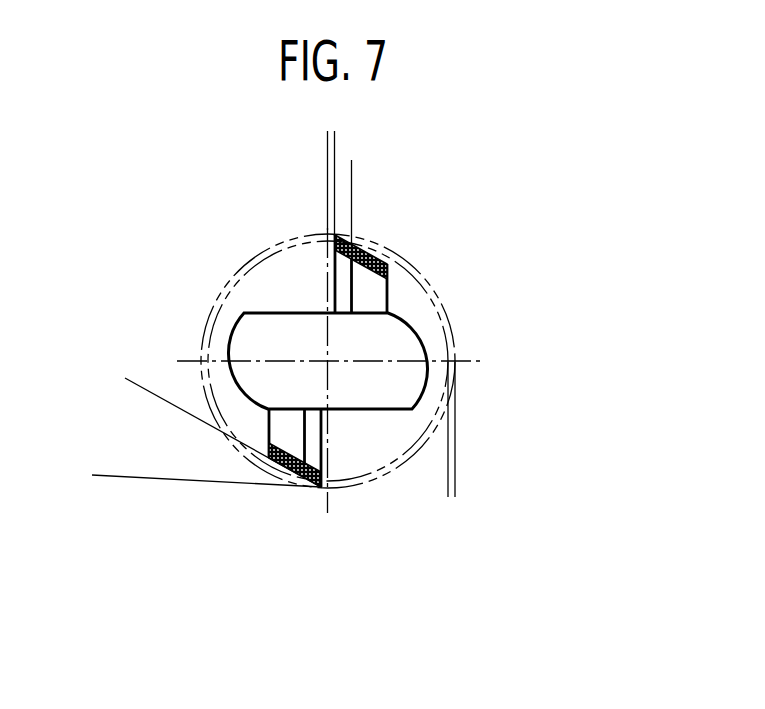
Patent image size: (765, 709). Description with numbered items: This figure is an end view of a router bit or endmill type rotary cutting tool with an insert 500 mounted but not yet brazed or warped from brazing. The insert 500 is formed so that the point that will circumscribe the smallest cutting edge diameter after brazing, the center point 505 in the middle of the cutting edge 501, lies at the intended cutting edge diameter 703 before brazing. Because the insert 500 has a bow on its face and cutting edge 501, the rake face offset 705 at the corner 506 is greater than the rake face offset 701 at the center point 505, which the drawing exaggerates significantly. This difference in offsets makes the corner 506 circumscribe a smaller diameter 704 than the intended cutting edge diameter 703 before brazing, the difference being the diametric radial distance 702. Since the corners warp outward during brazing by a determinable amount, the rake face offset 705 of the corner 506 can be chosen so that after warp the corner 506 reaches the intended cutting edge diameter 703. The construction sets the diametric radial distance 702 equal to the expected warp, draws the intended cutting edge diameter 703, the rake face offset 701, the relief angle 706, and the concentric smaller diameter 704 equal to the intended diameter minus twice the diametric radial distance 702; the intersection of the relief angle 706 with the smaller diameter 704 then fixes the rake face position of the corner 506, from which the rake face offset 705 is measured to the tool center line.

The insert 500 is at (289, 325).
The cutting edge 501 is at (317, 492).
The center point 505 is at (282, 239).
The corner 506 is at (422, 239).
The rake face offset 701 is at (277, 139).
The diametric radial distance 702 is at (397, 490).
The intended cutting edge diameter 703 is at (328, 412).
The smaller diameter 704 is at (328, 438).
The rake face offset 705 is at (277, 166).
The relief angle 706 is at (155, 332).